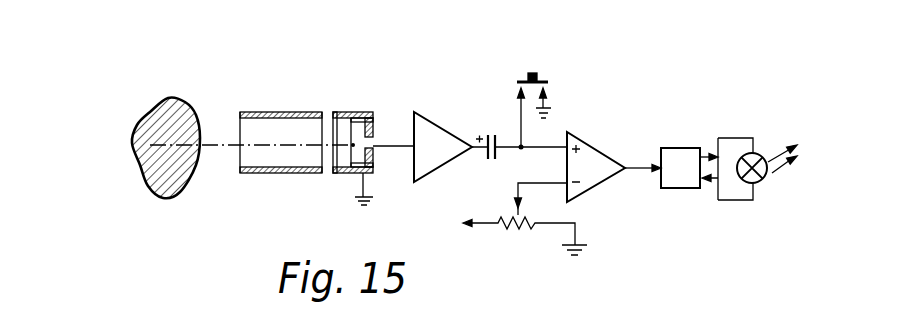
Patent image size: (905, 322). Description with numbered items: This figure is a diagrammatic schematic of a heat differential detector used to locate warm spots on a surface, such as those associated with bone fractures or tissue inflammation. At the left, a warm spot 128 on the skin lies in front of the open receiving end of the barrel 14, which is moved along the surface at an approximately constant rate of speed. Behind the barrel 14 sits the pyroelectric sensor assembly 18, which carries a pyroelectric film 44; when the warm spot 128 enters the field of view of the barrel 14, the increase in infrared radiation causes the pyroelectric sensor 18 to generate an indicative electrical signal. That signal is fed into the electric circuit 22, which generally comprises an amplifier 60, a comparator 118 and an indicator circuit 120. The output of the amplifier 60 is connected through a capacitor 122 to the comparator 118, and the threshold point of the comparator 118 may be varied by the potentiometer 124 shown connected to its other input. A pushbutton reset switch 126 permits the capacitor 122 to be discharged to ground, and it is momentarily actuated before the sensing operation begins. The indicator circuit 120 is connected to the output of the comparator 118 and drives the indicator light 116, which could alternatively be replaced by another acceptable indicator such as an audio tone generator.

The warm spot 128 is at (168, 98).
The barrel 14 is at (267, 112).
The pyroelectric sensor assembly 18 is at (339, 174).
The pyroelectric film 44 is at (354, 118).
The amplifier 60 is at (430, 128).
The electric circuit 22 is at (457, 68).
The capacitor 122 is at (496, 162).
The pushbutton reset switch 126 is at (555, 82).
The comparator 118 is at (588, 155).
The potentiometer 124 is at (499, 233).
The indicator circuit 120 is at (673, 155).
The indicator light 116 is at (742, 185).